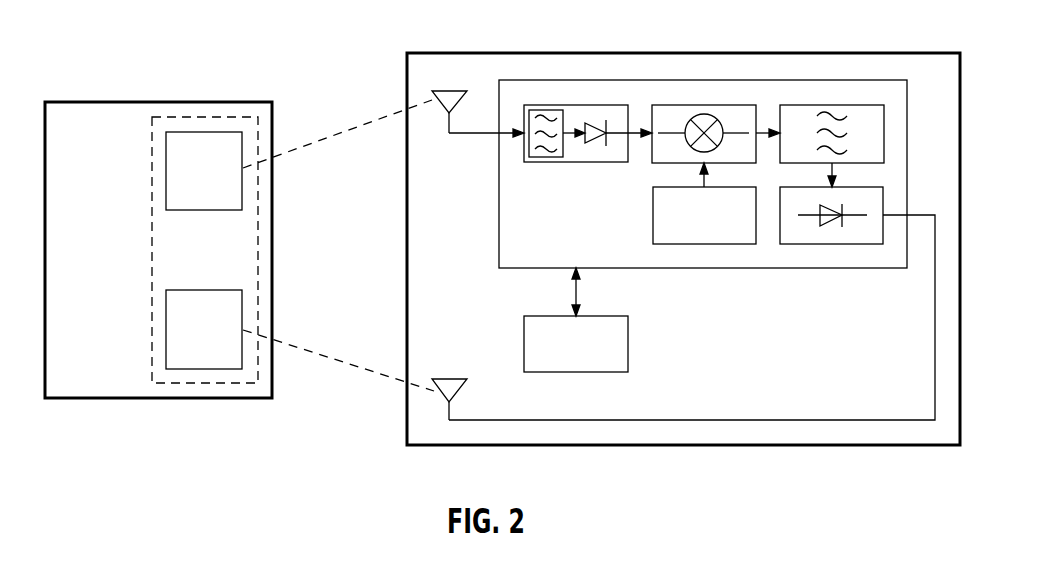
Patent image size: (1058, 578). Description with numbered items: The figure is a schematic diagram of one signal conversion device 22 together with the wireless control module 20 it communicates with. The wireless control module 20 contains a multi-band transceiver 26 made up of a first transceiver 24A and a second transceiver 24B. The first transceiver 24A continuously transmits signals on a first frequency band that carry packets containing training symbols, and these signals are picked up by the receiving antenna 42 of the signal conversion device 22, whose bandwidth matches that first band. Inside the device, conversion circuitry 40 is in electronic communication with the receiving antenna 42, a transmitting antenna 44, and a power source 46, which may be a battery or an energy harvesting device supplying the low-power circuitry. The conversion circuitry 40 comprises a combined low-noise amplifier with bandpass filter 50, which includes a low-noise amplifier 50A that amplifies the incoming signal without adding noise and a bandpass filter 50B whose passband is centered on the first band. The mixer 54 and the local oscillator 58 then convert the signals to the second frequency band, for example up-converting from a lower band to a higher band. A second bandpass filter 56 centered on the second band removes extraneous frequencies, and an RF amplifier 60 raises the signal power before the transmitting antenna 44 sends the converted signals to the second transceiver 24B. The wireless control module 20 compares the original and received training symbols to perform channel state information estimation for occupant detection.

The wireless control module 20 is at (98, 102).
The multi-band transceiver 26 is at (203, 117).
The first transceiver 24A is at (227, 167).
The second transceiver 24B is at (227, 326).
The signal conversion device 22 is at (683, 446).
The conversion circuitry 40 is at (901, 70).
The receiving antenna 42 is at (450, 90).
The transmitting antenna 44 is at (449, 379).
The power source 46 is at (588, 359).
The combined low-noise amplifier with bandpass filter 50 is at (573, 104).
The low-noise amplifier 50A is at (527, 146).
The bandpass filter 50B is at (590, 148).
The mixer 54 is at (704, 112).
The second bandpass filter 56 is at (808, 104).
The local oscillator 58 is at (717, 229).
The RF amplifier 60 is at (832, 224).